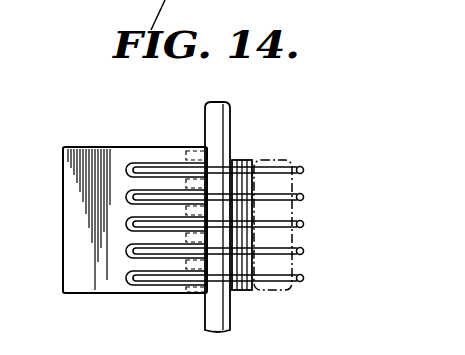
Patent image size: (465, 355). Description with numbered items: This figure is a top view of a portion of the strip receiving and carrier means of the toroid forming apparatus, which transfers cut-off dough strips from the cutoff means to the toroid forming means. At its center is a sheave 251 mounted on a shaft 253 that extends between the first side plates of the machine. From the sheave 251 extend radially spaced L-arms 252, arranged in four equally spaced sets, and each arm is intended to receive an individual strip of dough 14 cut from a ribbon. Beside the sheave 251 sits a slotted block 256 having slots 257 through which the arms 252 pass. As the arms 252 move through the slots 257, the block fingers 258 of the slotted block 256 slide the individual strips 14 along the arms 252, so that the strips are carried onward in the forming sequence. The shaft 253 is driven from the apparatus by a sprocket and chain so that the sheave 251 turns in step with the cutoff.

The strip of dough 14 is at (300, 212).
The sheave 251 is at (230, 171).
The L-arms 252 is at (304, 197).
The shaft 253 is at (215, 116).
The slotted block 256 is at (75, 198).
The slots 257 is at (130, 246).
The block fingers 258 is at (159, 183).